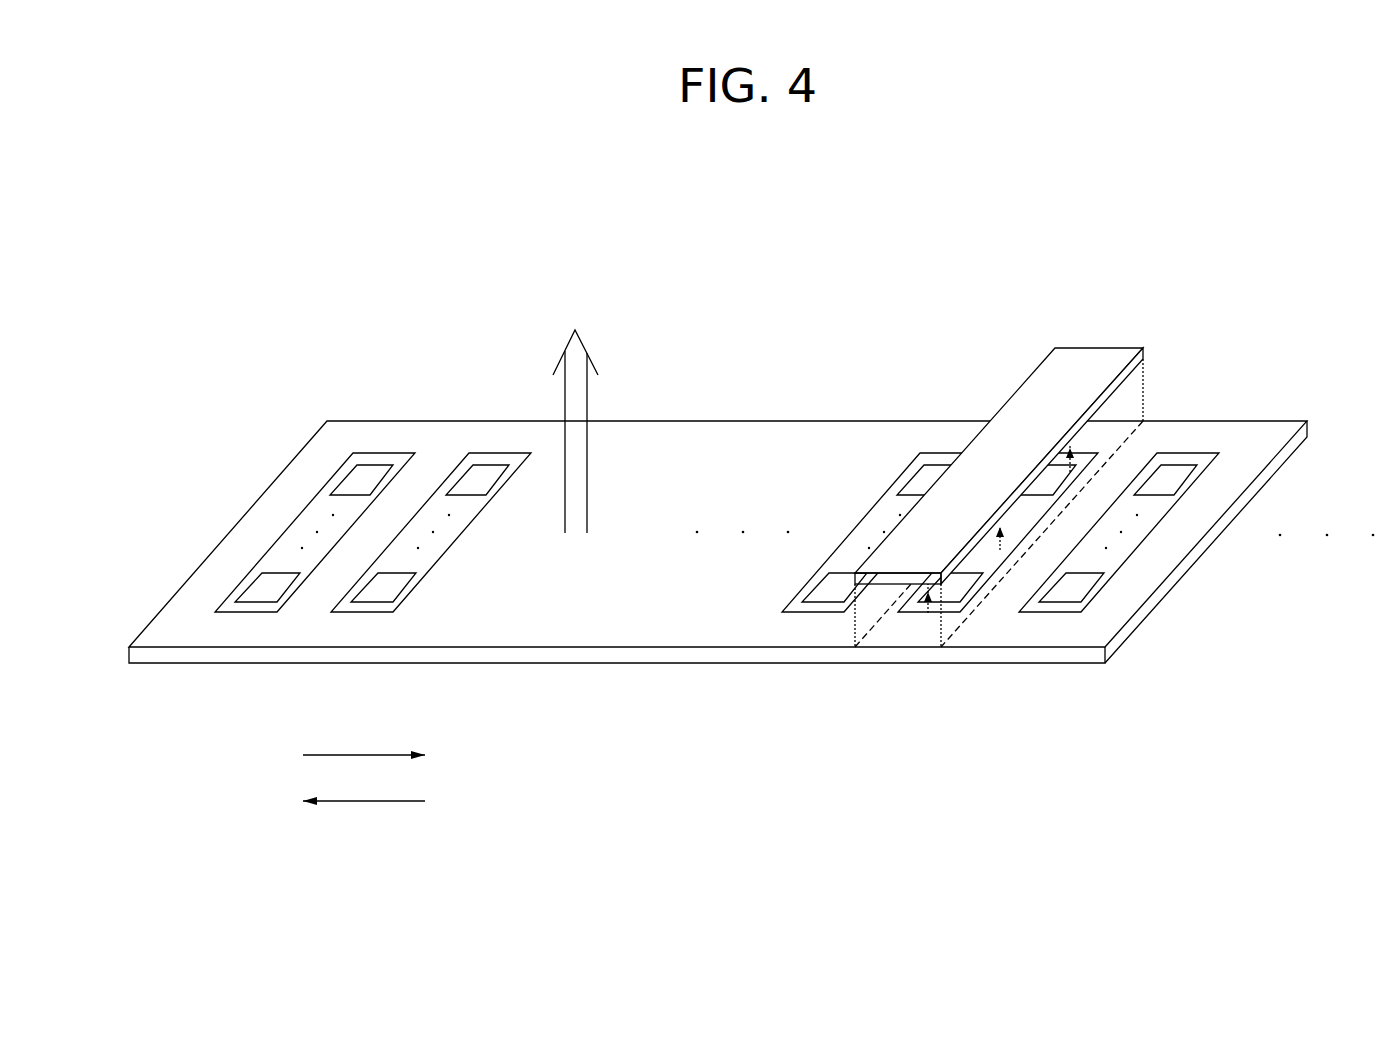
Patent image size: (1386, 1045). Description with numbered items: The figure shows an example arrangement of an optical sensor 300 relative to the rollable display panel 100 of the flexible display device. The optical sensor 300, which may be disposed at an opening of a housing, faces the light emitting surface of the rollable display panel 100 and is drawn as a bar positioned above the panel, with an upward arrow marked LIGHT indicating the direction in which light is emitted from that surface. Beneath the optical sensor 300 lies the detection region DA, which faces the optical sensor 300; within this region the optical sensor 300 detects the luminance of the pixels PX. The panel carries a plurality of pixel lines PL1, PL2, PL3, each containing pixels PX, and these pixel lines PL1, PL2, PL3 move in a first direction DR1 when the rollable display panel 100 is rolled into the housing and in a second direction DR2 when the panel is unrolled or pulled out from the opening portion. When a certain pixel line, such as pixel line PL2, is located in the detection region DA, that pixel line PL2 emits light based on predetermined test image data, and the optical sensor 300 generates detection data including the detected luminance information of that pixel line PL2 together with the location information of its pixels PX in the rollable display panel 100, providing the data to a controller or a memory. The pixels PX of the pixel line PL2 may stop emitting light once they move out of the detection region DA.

The rollable display panel 100 is at (787, 420).
The optical sensor 300 is at (1098, 347).
The pixels PX is at (1166, 481).
The pixel line PL1 is at (1136, 535).
The pixel line PL2 is at (900, 613).
The pixel line PL3 is at (807, 612).
The detection region DA is at (942, 668).
The light emission direction LIGHT is at (575, 414).
The first direction DR1 is at (364, 741).
The second direction DR2 is at (364, 787).